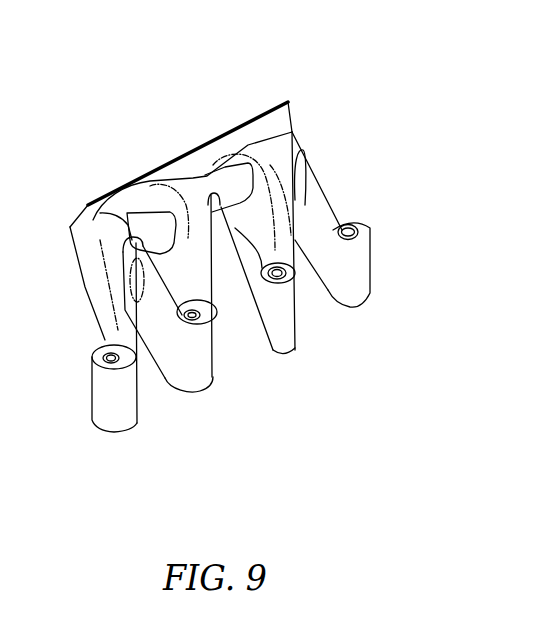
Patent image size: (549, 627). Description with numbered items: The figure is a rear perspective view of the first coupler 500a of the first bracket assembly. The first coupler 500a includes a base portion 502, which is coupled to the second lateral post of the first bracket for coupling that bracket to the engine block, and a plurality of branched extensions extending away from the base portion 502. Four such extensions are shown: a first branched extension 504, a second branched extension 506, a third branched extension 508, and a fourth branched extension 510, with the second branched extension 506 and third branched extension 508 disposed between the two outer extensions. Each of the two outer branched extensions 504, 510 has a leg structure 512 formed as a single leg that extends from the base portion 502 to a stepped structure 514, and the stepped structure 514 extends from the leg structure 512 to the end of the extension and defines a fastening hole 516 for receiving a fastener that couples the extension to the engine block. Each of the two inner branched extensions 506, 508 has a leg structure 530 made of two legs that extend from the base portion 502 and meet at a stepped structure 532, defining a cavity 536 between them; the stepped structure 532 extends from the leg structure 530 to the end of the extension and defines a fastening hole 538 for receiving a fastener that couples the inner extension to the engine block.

The first coupler 500a is at (339, 51).
The base portion 502 is at (291, 108).
The first branched extension 504 is at (393, 298).
The second branched extension 506 is at (294, 346).
The third branched extension 508 is at (211, 386).
The fourth branched extension 510 is at (131, 428).
The leg structure 512 is at (318, 192).
The stepped structure 514 is at (92, 392).
The fastening hole 516 is at (110, 354).
The leg structure 530 is at (278, 192).
The stepped structure 532 is at (299, 312).
The cavity 536 is at (148, 228).
The fastening hole 538 is at (265, 265).